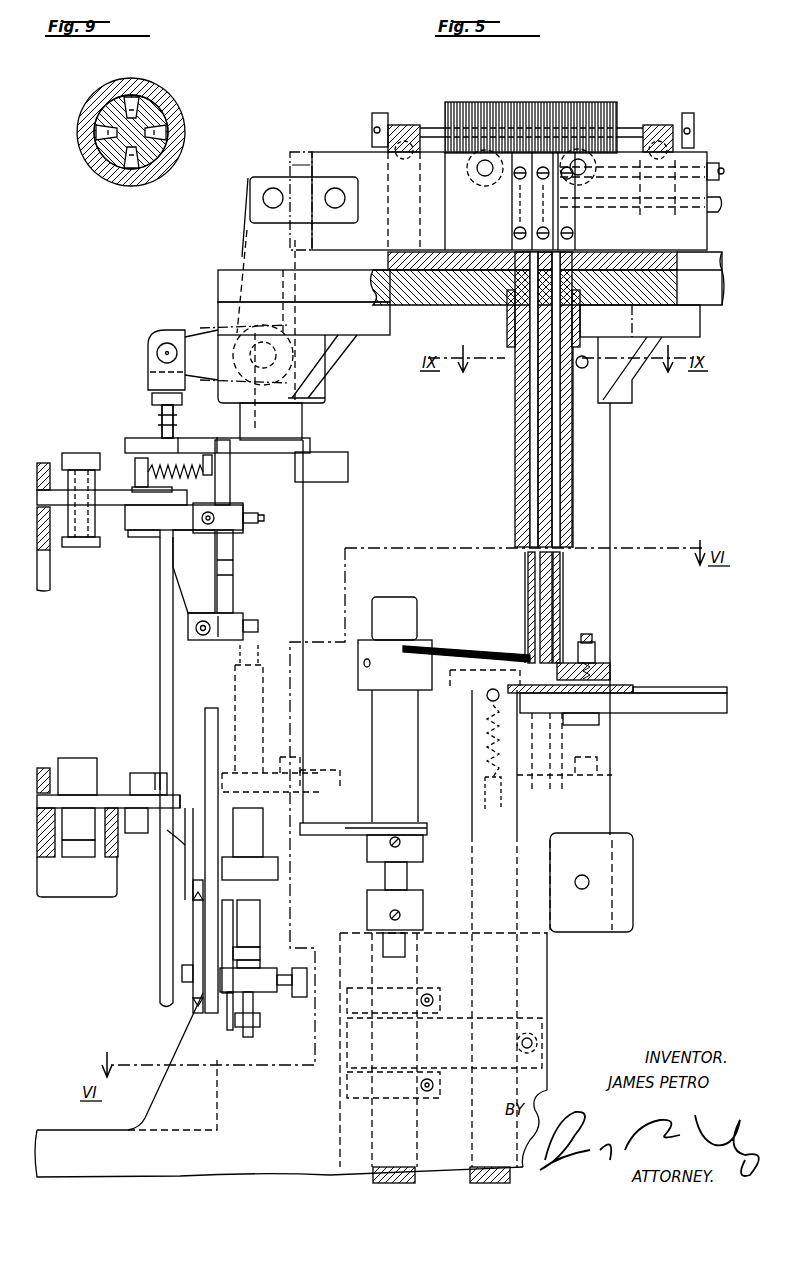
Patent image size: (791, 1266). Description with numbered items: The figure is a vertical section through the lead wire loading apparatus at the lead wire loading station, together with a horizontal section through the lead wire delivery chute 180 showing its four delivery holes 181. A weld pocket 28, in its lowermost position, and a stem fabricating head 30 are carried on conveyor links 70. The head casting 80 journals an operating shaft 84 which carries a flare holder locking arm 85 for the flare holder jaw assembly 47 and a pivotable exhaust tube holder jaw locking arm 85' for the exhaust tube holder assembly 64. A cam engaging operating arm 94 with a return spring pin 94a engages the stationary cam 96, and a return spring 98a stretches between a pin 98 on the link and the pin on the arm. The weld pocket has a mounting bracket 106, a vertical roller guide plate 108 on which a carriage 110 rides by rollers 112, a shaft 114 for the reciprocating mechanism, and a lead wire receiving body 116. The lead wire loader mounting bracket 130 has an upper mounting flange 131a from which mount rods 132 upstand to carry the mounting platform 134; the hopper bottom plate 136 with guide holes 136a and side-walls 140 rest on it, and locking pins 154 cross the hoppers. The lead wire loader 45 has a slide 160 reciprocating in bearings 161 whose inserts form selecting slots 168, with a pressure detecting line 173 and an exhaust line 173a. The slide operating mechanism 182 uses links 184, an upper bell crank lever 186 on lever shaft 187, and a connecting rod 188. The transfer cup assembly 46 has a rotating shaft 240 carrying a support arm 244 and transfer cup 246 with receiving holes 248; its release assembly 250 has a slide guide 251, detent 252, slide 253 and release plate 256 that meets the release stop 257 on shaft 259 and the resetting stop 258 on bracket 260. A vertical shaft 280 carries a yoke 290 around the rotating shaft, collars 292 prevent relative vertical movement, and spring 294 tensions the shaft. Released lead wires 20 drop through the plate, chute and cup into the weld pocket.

In FIG. 5, the lead wires 20 is at (575, 100).
In FIG. 5, the weld pocket 28 is at (278, 852).
In FIG. 5, the stem fabricating head 30 is at (134, 555).
In FIG. 5, the lead wire loader 45 is at (350, 140).
In FIG. 5, the transfer cup assembly 46 is at (518, 603).
In FIG. 5, the flare holder jaw assembly 47 is at (264, 626).
In FIG. 5, the exhaust tube holder assembly 64 is at (272, 519).
In FIG. 5, the link 70 is at (112, 490).
In FIG. 5, the casting 80 is at (190, 578).
In FIG. 5, the operating shaft 84 is at (230, 466).
In FIG. 5, the flare holder locking arm 85 is at (242, 571).
In FIG. 5, the exhaust tube holder jaw locking arm 85' is at (239, 527).
In FIG. 5, the cam engaging operating arm 94 is at (195, 438).
In FIG. 5, the return spring pin 94a is at (208, 455).
In FIG. 5, the stationary cam 96 is at (140, 438).
In FIG. 5, the pin 98 is at (135, 465).
In FIG. 5, the return spring 98a is at (175, 492).
In FIG. 5, the mounting bracket 106 is at (137, 833).
In FIG. 5, the vertical roller guide plate 108 is at (205, 730).
In FIG. 5, the weld pocket carriage 110 is at (270, 878).
In FIG. 5, the rollers 112 is at (193, 960).
In FIG. 5, the shaft 114 is at (278, 1000).
In FIG. 5, the lead wire receiving body 116 is at (270, 868).
In FIG. 5, the lead wire loader mounting bracket 130 is at (548, 973).
In FIG. 5, the upper plate-like mounting flange 131a is at (633, 890).
In FIG. 5, the mount rods 132 is at (612, 485).
In FIG. 5, the lead wire loader mounting platform 134 is at (218, 275).
In FIG. 5, the bottom plate 136 is at (680, 262).
In FIG. 5, the guide holes 136a is at (575, 250).
In FIG. 5, the longitudinal side-walls 140 is at (694, 140).
In FIG. 5, the lead wire locking pins 154 is at (433, 132).
In FIG. 5, the slide 160 is at (327, 157).
In FIG. 5, the bearings 161 is at (404, 125).
In FIG. 5, the lead wire selecting slots 168 is at (514, 233).
In FIG. 5, the pressure detecting line 173 is at (719, 163).
In FIG. 5, the exhaust line 173a is at (705, 205).
In FIG. 9, the lead wire delivery chute 180 is at (183, 103).
In FIG. 5, the lead wire delivery chute 180 is at (515, 452).
In FIG. 9, the delivery holes 181 is at (133, 100).
In FIG. 5, the delivery holes 181 is at (538, 478).
In FIG. 5, the lead wire selector slide operating mechanism 182 is at (240, 193).
In FIG. 5, the links 184 is at (336, 223).
In FIG. 5, the upper bell crank lever 186 is at (192, 335).
In FIG. 5, the lever shaft 187 is at (271, 421).
In FIG. 5, the connecting rod 188 is at (160, 652).
In FIG. 5, the rotating shaft 240 is at (405, 760).
In FIG. 5, the transfer cup support arm 244 is at (440, 648).
In FIG. 5, the transfer cup 246 is at (560, 600).
In FIG. 5, the lead wire receiving holes 248 is at (552, 572).
In FIG. 5, the transfer cup release assembly 250 is at (582, 722).
In FIG. 5, the slide guide 251 is at (605, 663).
In FIG. 5, the detent 252 is at (595, 638).
In FIG. 5, the slide 253 is at (487, 692).
In FIG. 5, the release plate 256 is at (612, 705).
In FIG. 5, the lead wire release stop 257 is at (338, 823).
In FIG. 5, the transfer cup slide resetting stop 258 is at (648, 687).
In FIG. 5, the shaft 259 is at (398, 880).
In FIG. 5, the bracket 260 is at (700, 705).
In FIG. 5, the vertical shaft 280 is at (472, 800).
In FIG. 5, the yoke 290 is at (545, 1028).
In FIG. 5, the collars 292 is at (433, 1078).
In FIG. 5, the spring 294 is at (485, 742).